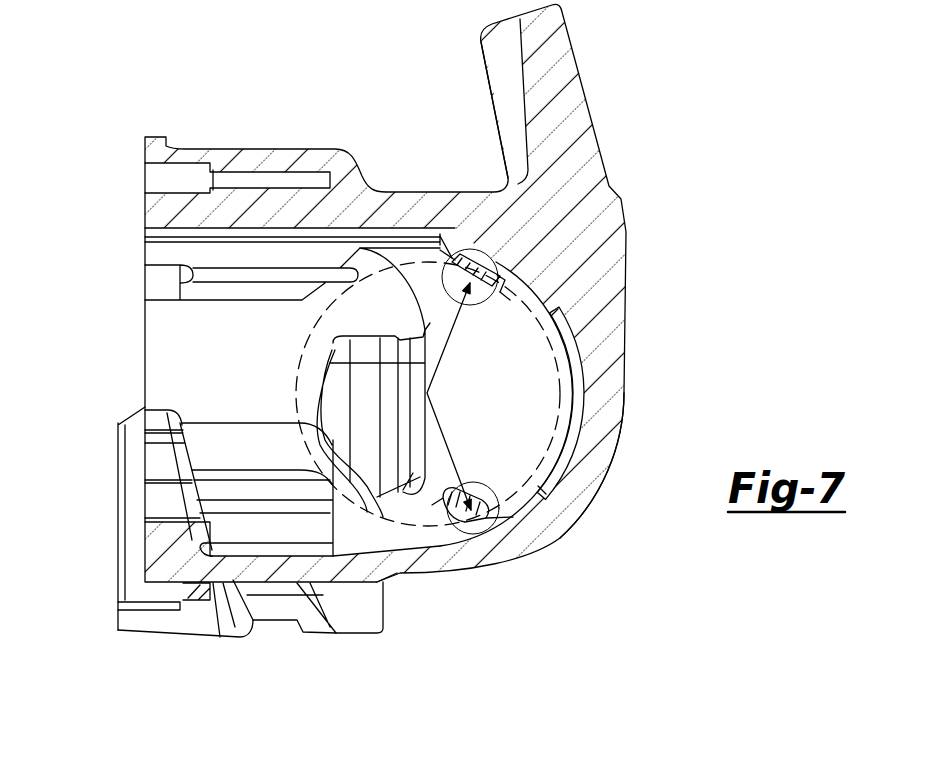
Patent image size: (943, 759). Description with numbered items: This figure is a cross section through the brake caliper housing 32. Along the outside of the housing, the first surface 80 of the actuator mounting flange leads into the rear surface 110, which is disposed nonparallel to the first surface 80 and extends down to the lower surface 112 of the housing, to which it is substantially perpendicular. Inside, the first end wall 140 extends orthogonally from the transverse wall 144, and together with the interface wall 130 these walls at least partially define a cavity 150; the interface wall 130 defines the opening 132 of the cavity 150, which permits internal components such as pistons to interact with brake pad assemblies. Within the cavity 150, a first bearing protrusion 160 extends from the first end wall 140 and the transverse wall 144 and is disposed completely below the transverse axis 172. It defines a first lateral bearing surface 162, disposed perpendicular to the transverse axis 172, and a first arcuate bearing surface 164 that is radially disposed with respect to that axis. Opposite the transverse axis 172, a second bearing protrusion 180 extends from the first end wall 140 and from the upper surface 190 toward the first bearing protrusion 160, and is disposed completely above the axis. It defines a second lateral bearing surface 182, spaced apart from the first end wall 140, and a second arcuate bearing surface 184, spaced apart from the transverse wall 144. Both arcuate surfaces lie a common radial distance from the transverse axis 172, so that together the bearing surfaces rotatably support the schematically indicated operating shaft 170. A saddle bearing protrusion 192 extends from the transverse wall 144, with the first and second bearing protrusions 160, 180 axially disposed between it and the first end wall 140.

The caliper housing 32 is at (117, 58).
The first surface 80 is at (577, 58).
The rear surface 110 is at (623, 398).
The lower surface 112 is at (268, 593).
The interface wall 130 is at (145, 552).
The opening 132 is at (140, 318).
The first end wall 140 is at (534, 366).
The transverse wall 144 is at (606, 487).
The cavity 150 is at (203, 377).
The first bearing protrusion 160 is at (488, 522).
The first lateral bearing surface 162 is at (432, 505).
The first arcuate bearing surface 164 is at (515, 520).
The operating shaft 170 is at (543, 325).
The transverse axis 172 is at (428, 393).
The second bearing protrusion 180 is at (495, 231).
The second lateral bearing surface 182 is at (507, 290).
The second arcuate bearing surface 184 is at (447, 245).
The upper surface 190 is at (478, 250).
The saddle bearing protrusion 192 is at (566, 452).